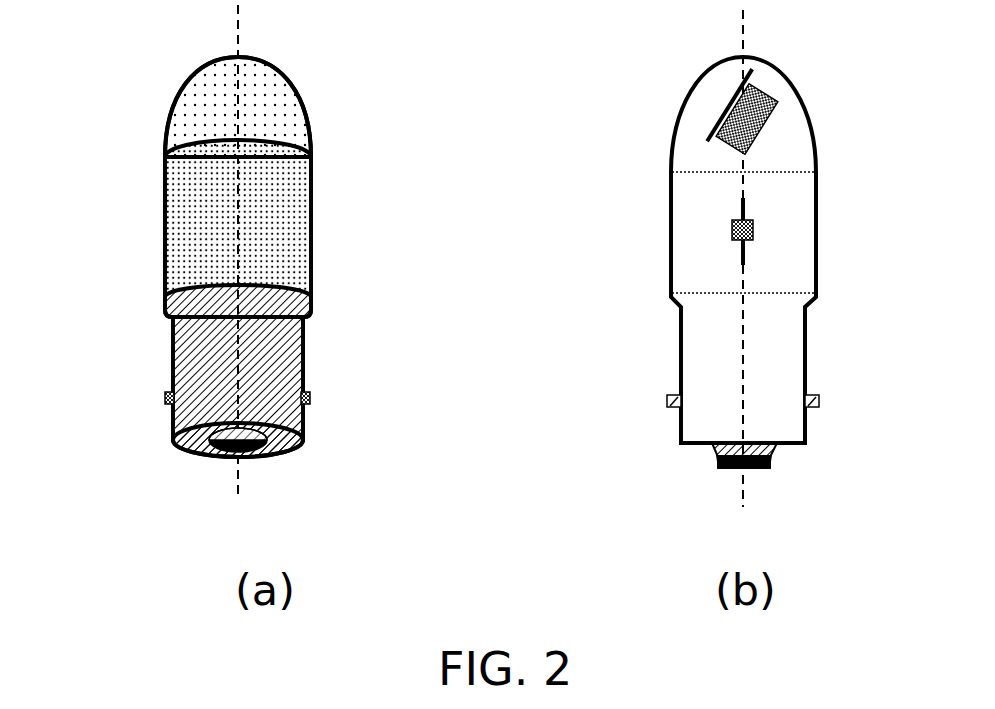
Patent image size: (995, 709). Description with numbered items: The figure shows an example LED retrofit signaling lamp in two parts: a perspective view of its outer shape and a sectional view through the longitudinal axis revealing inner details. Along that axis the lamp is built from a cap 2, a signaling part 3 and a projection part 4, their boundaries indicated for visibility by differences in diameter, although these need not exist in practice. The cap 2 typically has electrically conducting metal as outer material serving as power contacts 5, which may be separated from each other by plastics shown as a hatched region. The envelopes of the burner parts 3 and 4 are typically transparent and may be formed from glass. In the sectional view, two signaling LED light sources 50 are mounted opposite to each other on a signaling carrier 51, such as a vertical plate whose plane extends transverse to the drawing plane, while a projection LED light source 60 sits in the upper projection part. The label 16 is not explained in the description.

The cap 2 is at (300, 343).
The signaling part 3 is at (311, 203).
The projection part 4 is at (310, 105).
The electrical power contacts 5 is at (300, 423).
The lamp housing 16 is at (87, 478).
The signaling LED light sources 50 is at (753, 230).
The signaling carrier 51 is at (743, 208).
The projection LED light source 60 is at (766, 90).